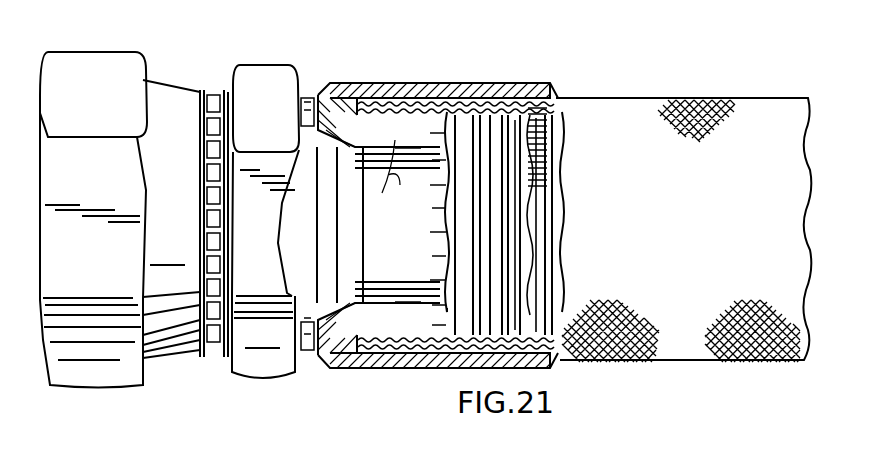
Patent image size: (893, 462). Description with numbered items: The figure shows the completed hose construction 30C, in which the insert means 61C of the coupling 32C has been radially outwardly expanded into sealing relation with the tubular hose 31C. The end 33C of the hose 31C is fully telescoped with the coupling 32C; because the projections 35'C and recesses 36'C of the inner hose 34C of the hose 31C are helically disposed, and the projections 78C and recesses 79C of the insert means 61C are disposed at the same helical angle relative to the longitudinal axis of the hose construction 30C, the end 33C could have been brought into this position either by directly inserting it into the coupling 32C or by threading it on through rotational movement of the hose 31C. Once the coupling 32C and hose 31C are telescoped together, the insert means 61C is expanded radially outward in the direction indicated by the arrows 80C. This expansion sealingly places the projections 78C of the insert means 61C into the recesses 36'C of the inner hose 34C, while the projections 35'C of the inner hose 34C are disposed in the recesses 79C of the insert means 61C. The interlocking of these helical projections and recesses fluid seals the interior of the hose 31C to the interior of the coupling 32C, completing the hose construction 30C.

The hose construction 30C is at (425, 196).
The tubular hose 31C is at (712, 100).
The coupling 32C is at (268, 84).
The end of the hose 33C is at (378, 95).
The inner hose 34C is at (535, 203).
The projections of the inner hose 35'C is at (577, 223).
The recesses of the inner hose 36'C is at (401, 175).
The insert means 61C is at (512, 262).
The projections of the insert means 78C is at (443, 100).
The recesses of the insert means 79C is at (477, 100).
The arrows 80C is at (402, 313).